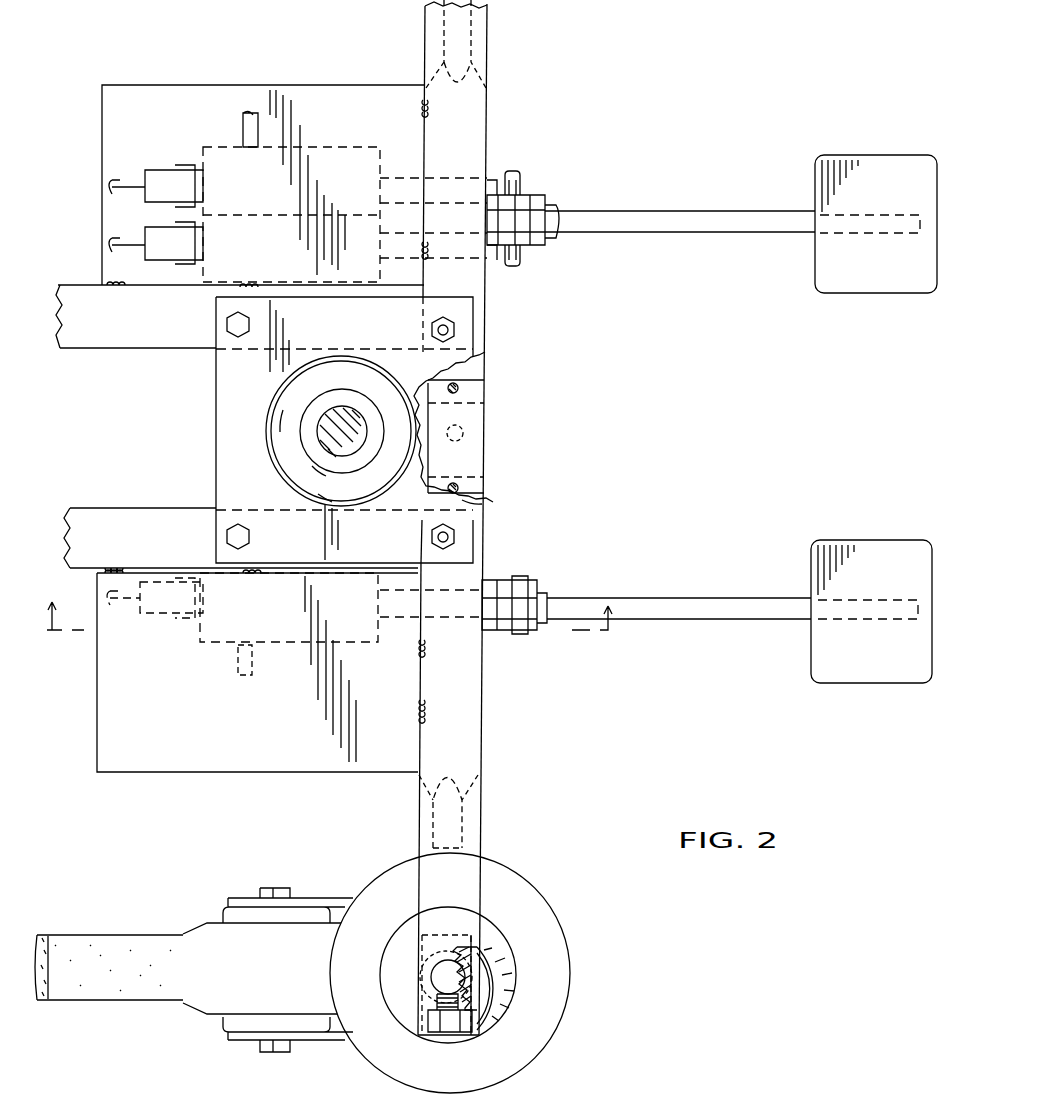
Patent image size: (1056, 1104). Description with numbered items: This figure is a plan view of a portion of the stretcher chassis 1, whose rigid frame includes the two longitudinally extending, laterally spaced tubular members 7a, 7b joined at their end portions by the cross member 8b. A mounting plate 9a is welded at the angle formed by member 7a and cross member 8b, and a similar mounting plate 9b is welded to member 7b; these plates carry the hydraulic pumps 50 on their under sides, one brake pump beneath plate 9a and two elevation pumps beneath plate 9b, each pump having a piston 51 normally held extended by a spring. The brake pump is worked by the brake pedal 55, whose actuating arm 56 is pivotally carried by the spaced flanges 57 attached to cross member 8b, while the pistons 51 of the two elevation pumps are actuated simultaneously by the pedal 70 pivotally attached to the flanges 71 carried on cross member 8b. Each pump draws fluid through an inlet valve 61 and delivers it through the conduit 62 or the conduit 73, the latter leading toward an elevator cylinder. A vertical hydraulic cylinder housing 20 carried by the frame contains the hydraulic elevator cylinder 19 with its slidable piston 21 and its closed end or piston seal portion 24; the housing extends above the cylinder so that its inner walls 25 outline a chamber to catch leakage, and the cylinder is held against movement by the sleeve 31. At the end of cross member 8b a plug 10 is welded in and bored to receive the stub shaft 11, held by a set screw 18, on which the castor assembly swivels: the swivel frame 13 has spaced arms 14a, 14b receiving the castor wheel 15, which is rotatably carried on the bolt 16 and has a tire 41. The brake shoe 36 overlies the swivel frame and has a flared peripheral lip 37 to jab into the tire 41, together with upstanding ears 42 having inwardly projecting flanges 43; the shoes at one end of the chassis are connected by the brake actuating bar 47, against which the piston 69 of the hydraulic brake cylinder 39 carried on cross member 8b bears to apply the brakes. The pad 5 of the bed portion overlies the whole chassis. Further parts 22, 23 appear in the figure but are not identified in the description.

The chassis portion 1 is at (582, 396).
The pad 5 is at (329, 634).
The longitudinally extending member 7a is at (126, 516).
The longitudinally extending member 7b is at (164, 348).
The cross member 8b is at (483, 720).
The mounting plate 9a is at (270, 772).
The mounting plate 9b is at (236, 85).
The plug 10 is at (463, 986).
The stub shaft 11 is at (470, 964).
The swivel frame 13 is at (307, 1047).
The arm 14a is at (337, 1044).
The arm 14b is at (328, 900).
The castor wheel 15 is at (200, 1007).
The bolt 16 is at (267, 1051).
The set screw 18 is at (454, 1032).
The hydraulic elevator cylinder 19 is at (306, 460).
The hydraulic cylinder housing 20 is at (276, 395).
The piston 21 is at (318, 442).
The mounting plate 22 is at (225, 483).
The plate bolts 23 is at (227, 540).
The piston seal portion 24 is at (340, 394).
The inner walls 25 is at (320, 487).
The sleeve 31 is at (282, 420).
The brake shoe 36 is at (516, 892).
The flared peripheral lip portion 37 is at (570, 970).
The hydraulic brake cylinder 39 is at (470, 460).
The tire 41 is at (117, 988).
The upstanding ear 42 is at (381, 958).
The flange portion 43 is at (390, 985).
The brake actuating bar 47 is at (476, 505).
The hydraulic pump 50 is at (340, 210).
The piston 51 is at (500, 181).
The brake pedal 55 is at (820, 629).
The actuating arm 56 is at (746, 602).
The spaced flanges 57 is at (536, 612).
The inlet valve 61 is at (163, 615).
The conduit 62 is at (239, 668).
The piston 69 is at (462, 429).
The pedal 70 is at (872, 170).
The flanges 71 is at (537, 212).
The conduit 73 is at (120, 230).